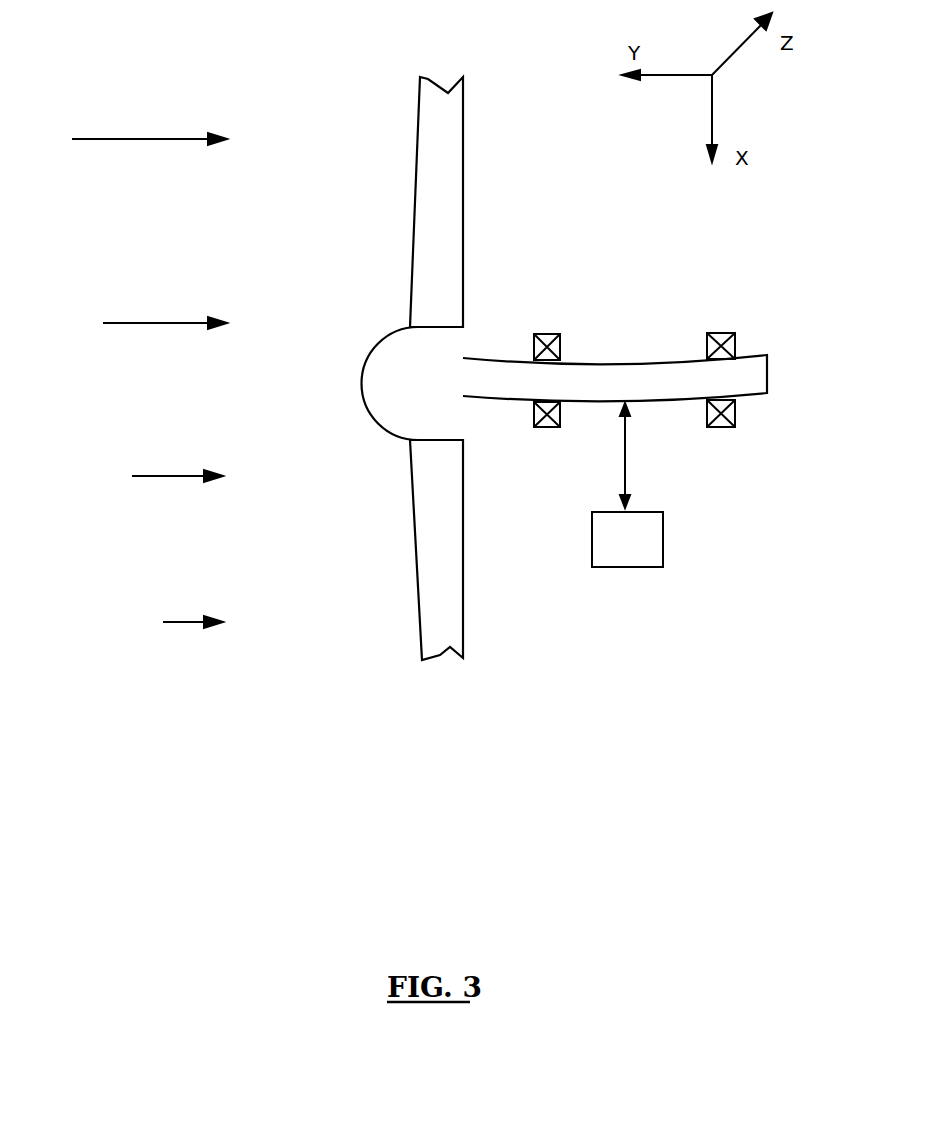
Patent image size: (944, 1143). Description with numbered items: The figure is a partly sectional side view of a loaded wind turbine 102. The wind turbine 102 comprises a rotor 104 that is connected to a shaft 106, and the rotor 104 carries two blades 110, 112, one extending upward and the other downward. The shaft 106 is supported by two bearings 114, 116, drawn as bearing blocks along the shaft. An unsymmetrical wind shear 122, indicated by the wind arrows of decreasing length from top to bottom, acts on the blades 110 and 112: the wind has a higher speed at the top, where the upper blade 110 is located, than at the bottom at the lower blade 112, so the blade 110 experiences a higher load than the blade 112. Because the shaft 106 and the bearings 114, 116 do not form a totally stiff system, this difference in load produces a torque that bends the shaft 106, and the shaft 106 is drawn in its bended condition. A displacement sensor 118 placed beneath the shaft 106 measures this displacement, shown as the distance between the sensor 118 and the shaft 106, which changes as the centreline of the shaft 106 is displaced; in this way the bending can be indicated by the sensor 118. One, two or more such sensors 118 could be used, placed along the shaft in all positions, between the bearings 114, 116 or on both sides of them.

The wind turbine 102 is at (533, 467).
The rotor 104 is at (356, 379).
The shaft 106 is at (490, 358).
The blade 110 is at (465, 206).
The blade 112 is at (465, 522).
The bearing 114 is at (548, 332).
The bearing 116 is at (720, 332).
The displacement sensor 118 is at (678, 498).
The unsymmetrical wind shear 122 is at (160, 703).